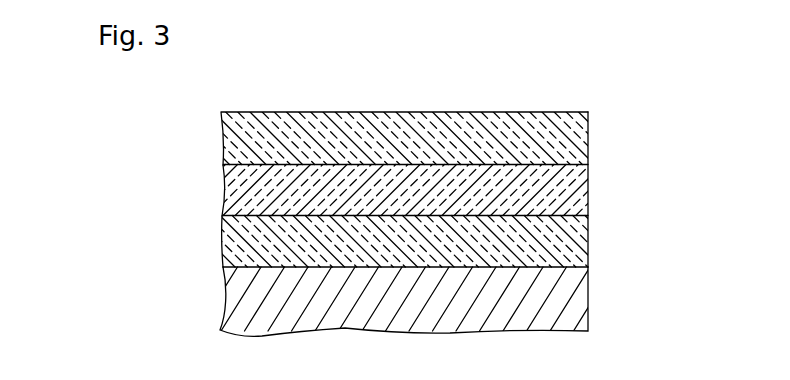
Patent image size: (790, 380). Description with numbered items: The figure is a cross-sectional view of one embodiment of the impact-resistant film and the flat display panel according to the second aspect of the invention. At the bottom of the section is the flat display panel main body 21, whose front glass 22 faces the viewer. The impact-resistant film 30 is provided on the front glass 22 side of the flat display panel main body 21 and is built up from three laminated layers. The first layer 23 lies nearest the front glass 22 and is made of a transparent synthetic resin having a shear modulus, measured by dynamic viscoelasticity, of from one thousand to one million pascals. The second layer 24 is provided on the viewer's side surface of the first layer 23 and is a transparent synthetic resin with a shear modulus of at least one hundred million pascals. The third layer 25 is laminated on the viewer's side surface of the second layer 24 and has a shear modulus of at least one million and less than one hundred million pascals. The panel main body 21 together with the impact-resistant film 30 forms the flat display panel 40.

The flat display panel main body 21 is at (423, 301).
The front glass 22 is at (557, 266).
The first layer 23 is at (653, 113).
The second layer 24 is at (588, 184).
The third layer 25 is at (588, 135).
The impact-resistant film 30 is at (434, 189).
The flat display panel 40 is at (455, 224).